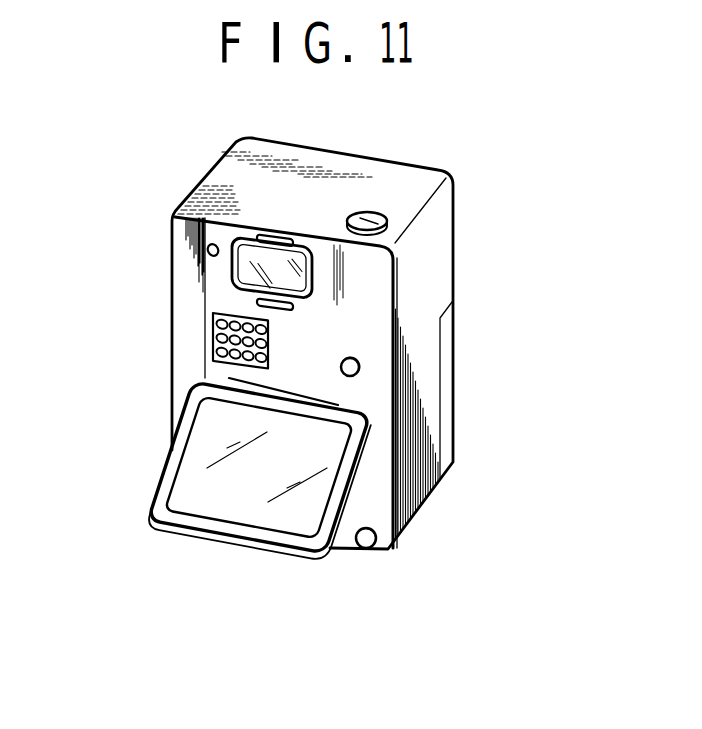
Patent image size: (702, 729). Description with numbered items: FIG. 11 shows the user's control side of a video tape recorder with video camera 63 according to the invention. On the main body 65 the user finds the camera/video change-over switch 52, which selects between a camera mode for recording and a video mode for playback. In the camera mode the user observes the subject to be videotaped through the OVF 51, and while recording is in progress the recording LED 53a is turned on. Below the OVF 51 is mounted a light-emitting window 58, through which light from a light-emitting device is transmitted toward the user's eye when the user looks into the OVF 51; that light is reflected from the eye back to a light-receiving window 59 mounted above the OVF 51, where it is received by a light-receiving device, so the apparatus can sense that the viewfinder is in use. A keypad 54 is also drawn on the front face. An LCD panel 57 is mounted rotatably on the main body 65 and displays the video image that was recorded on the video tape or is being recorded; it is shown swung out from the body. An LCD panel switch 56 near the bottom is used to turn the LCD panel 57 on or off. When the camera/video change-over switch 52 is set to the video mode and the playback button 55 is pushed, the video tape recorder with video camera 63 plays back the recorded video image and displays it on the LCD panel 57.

The video tape recorder with video camera 63 is at (424, 160).
The camera/video change-over switch 52 is at (390, 236).
The recording LED 53a is at (217, 262).
The OVF 51 is at (233, 272).
The light-receiving window 59 is at (320, 244).
The light-emitting window 58 is at (295, 308).
The key pad 54 is at (213, 337).
The playback button 55 is at (360, 371).
The LCD panel switch 56 is at (378, 543).
The main body 65 is at (168, 393).
The LCD panel 57 is at (232, 542).